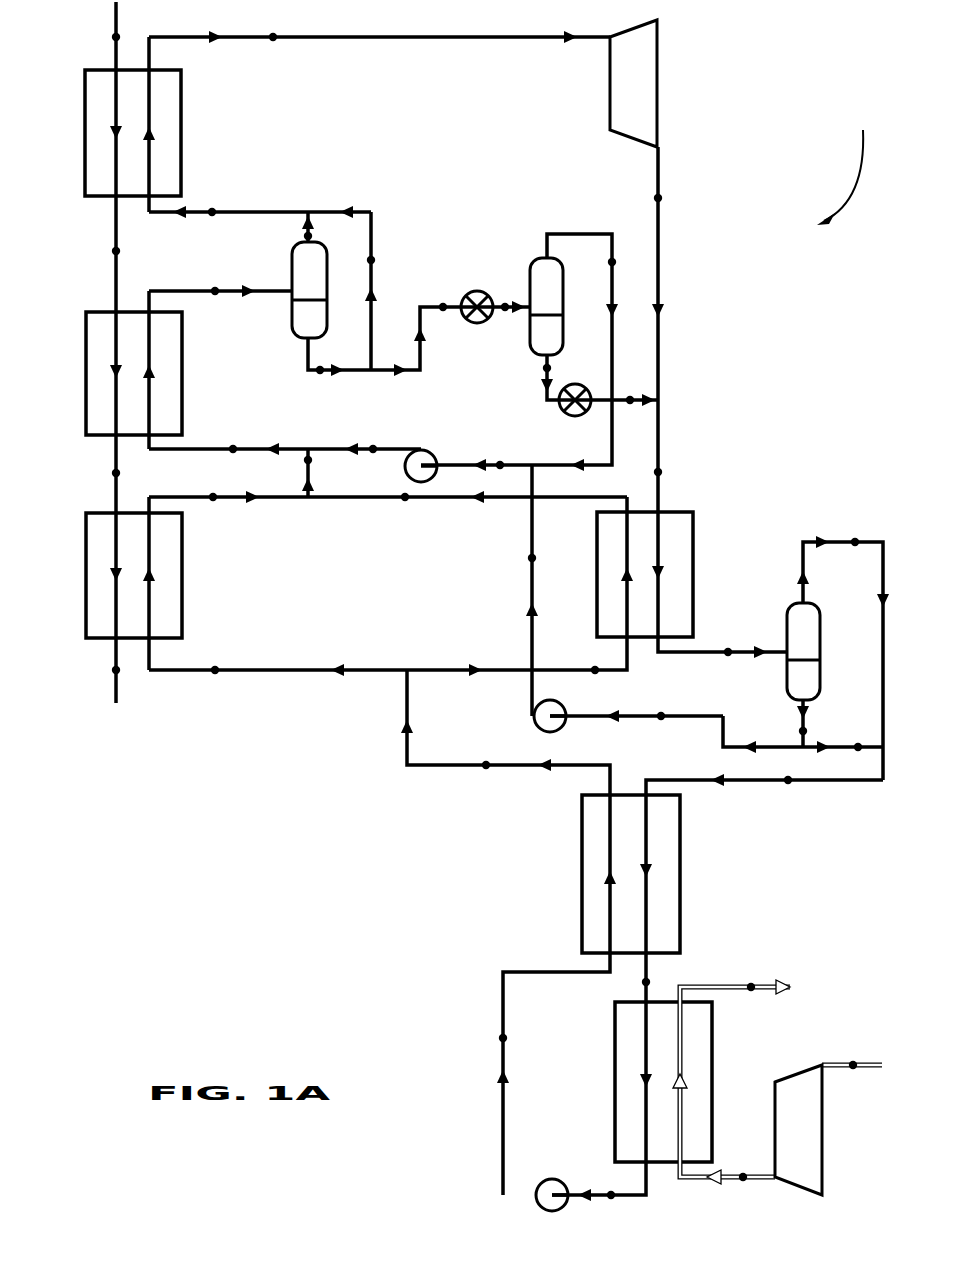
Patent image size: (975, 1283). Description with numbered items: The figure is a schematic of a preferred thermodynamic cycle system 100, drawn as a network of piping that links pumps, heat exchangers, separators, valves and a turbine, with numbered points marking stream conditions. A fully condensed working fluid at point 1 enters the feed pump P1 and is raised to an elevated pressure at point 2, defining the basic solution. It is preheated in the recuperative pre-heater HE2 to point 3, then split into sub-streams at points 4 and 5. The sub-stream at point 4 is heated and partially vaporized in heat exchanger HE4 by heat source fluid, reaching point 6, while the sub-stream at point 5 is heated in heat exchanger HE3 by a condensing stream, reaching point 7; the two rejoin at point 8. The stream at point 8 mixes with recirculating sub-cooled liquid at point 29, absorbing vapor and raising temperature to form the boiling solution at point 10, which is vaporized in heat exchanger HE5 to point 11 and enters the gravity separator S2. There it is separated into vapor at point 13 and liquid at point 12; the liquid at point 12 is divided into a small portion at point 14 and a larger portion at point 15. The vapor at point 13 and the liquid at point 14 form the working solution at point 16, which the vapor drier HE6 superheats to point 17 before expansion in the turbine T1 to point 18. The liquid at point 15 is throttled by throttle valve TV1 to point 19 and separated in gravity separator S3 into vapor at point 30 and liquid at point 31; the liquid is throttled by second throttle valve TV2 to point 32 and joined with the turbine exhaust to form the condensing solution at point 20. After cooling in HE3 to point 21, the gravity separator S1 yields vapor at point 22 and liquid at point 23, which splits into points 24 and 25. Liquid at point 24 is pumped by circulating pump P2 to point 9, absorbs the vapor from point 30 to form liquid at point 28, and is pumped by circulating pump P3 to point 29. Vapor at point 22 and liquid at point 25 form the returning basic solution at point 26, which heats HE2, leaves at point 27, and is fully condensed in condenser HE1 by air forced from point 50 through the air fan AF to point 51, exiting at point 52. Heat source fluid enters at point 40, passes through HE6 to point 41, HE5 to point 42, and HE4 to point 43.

The fully condensed working fluid stream point 1 is at (605, 1183).
The pumped working fluid stream point 2 is at (485, 1040).
The preheated basic solution stream point 3 is at (485, 786).
The first basic solution sub-stream point 4 is at (214, 685).
The second basic solution sub-stream point 5 is at (594, 685).
The heated first sub-stream point 6 is at (212, 512).
The heated second sub-stream point 7 is at (404, 512).
The combined basic solution stream point 8 is at (319, 460).
The sub-cooled liquid stream point 9 is at (520, 558).
The boiling solution stream point 10 is at (233, 461).
The vaporized boiling solution stream point 11 is at (212, 304).
The liquid stream point from separator S2 12 is at (320, 385).
The vapor stream point from separator S2 13 is at (292, 236).
The small liquid sub-stream point 14 is at (388, 261).
The recirculating liquid stream point 15 is at (442, 318).
The working solution stream point 16 is at (212, 228).
The superheated working solution stream point 17 is at (273, 56).
The turbine exhaust stream point 18 is at (672, 198).
The throttled vapor-liquid mixture point 19 is at (506, 318).
The condensing solution stream point 20 is at (674, 473).
The partially condensed stream point 21 is at (728, 665).
The vapor stream point from separator S1 22 is at (855, 529).
The liquid stream point from separator S1 23 is at (789, 733).
The liquid sub-stream point to pump P2 24 is at (660, 730).
The liquid sub-stream point to basic solution 25 is at (858, 736).
The returning basic solution stream point 26 is at (788, 795).
The partially condensed basic solution point 27 is at (631, 982).
The absorbed liquid stream point 28 is at (500, 453).
The recirculating solution stream point 29 is at (373, 462).
The vapor stream point from separator S3 30 is at (626, 262).
The liquid stream point from separator S3 31 is at (531, 370).
The second throttled stream point 32 is at (631, 389).
The heat source fluid inlet point 40 is at (97, 39).
The heat source fluid point after HE6 41 is at (101, 252).
The heat source fluid point after HE5 42 is at (97, 473).
The heat source fluid outlet point 43 is at (97, 671).
The air stream inlet point 50 is at (853, 1054).
The forced air stream point 51 is at (743, 1165).
The air stream outlet point 52 is at (752, 1000).
The system 100 is at (847, 163).
The condenser HE1 is at (690, 1082).
The recuperative pre-heater HE2 is at (664, 874).
The heat exchanger HE3 is at (670, 574).
The heat exchanger HE4 is at (104, 575).
The heat exchanger HE5 is at (104, 373).
The vapor drier heat exchanger HE6 is at (104, 133).
The gravity separator S1 is at (803, 651).
The gravity separator S2 is at (309, 290).
The gravity separator S3 is at (546, 306).
The feed pump P1 is at (553, 1177).
The circulating pump P2 is at (529, 716).
The circulating pump P3 is at (421, 445).
The throttle valve TV1 is at (470, 292).
The second throttle valve TV2 is at (575, 415).
The turbine T1 is at (633, 83).
The air fan AF is at (798, 1130).